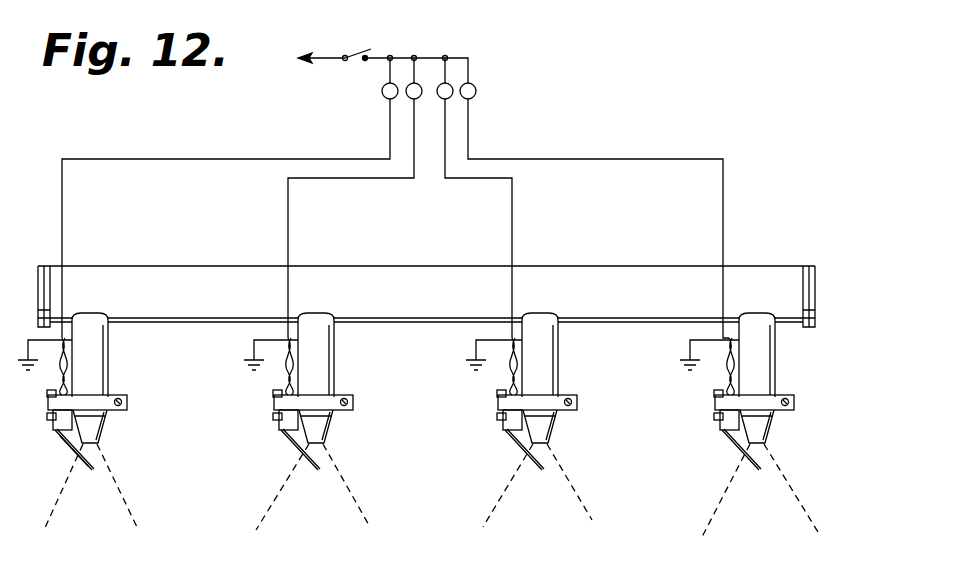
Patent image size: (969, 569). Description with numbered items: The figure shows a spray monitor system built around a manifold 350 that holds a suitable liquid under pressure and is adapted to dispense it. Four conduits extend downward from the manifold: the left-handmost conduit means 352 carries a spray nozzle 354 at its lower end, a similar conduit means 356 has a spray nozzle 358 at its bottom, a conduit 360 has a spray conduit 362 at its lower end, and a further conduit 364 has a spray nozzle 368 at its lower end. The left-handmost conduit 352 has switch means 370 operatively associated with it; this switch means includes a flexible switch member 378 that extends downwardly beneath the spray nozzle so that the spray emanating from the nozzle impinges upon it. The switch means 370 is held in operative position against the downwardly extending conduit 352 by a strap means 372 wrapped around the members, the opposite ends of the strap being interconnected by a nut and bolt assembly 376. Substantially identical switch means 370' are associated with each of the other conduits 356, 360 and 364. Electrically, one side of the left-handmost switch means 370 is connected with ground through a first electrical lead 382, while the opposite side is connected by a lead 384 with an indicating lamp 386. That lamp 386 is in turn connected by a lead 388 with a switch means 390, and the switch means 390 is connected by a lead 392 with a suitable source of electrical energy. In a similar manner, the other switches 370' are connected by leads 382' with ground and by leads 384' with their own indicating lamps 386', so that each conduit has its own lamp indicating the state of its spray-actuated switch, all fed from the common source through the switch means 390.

The manifold 350 is at (407, 270).
The conduit means 352 is at (107, 366).
The spray nozzle 354 is at (105, 436).
The conduit means 356 is at (333, 366).
The spray nozzle 358 is at (330, 436).
The conduit 360 is at (557, 366).
The spray conduit 362 is at (554, 436).
The conduit 364 is at (774, 366).
The spray nozzle 368 is at (771, 436).
The switch means 370 is at (60, 455).
The switch means 370' is at (502, 457).
The strap means 372 is at (107, 398).
The nut and bolt assembly 376 is at (124, 402).
The flexible switch member 378 is at (90, 470).
The electrical lead 382 is at (65, 339).
The leads 382' is at (485, 341).
The lead 384 is at (395, 218).
The leads 384' is at (540, 218).
The indicating lamp 386 is at (368, 102).
The indicating lamps 386' is at (468, 106).
The lead 388 is at (386, 57).
The switch means 390 is at (365, 52).
The lead 392 is at (320, 56).